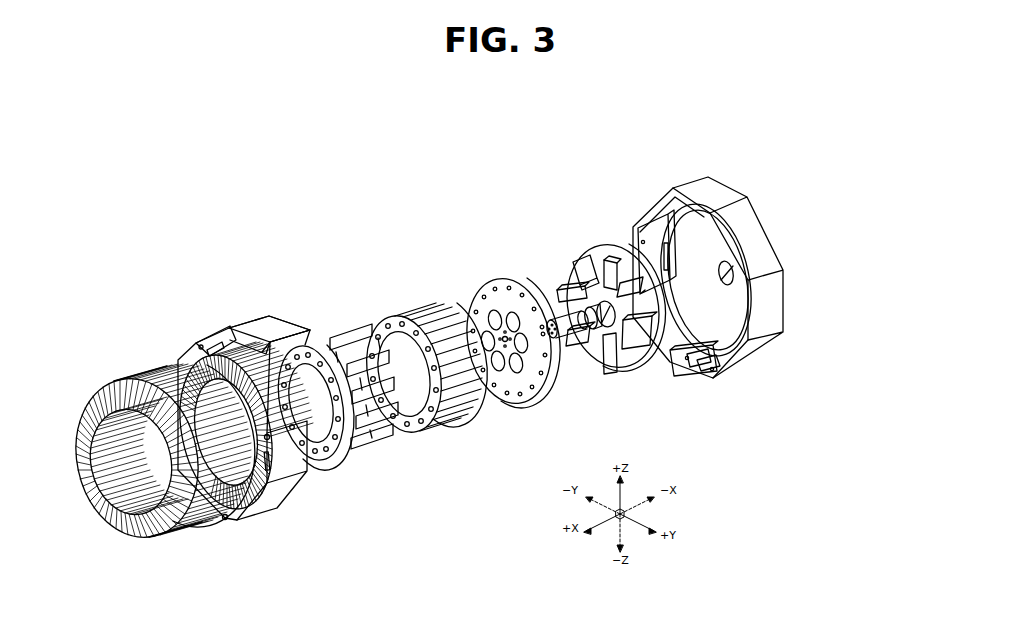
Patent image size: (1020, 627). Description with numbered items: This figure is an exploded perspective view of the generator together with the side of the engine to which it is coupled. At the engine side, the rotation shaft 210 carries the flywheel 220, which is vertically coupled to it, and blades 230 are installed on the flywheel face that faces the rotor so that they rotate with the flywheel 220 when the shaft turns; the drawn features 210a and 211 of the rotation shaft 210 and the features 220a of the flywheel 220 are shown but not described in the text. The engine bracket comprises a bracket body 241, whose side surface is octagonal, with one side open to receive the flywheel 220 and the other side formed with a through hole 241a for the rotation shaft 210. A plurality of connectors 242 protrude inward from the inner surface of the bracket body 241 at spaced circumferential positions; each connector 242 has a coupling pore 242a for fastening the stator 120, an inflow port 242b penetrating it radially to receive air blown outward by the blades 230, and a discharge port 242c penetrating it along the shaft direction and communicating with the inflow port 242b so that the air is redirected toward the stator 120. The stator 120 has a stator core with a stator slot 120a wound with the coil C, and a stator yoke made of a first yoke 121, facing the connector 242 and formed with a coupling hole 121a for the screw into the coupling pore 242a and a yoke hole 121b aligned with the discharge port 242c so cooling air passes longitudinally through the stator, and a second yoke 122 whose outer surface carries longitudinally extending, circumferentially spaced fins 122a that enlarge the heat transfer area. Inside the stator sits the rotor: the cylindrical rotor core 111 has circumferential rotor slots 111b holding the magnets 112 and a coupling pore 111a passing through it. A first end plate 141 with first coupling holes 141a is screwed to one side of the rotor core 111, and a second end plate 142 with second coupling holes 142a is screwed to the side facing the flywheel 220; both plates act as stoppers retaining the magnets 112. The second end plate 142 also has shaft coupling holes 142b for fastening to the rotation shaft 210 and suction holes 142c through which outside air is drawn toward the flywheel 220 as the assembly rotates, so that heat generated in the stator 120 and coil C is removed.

The coil C is at (147, 535).
The stator 120 is at (253, 432).
The stator slot 120a is at (237, 522).
The first yoke 121 is at (201, 347).
The coupling hole 121a is at (267, 440).
The yoke hole 121b is at (213, 366).
The second yoke 122 is at (229, 356).
The fins 122a is at (264, 341).
The first end plate 141 is at (320, 394).
The first coupling holes 141a is at (289, 345).
The rotor core 111 is at (438, 371).
The coupling pore 111a is at (440, 417).
The rotor slots 111b is at (393, 315).
The magnet 112 is at (382, 433).
The second end plate 142 is at (523, 340).
The second coupling holes 142a is at (533, 382).
The shaft coupling holes 142b is at (500, 318).
The suction holes 142c is at (502, 336).
The rotation shaft 210 is at (551, 267).
The shaft end face 210a is at (548, 324).
The shaft bearing nut 211 is at (590, 307).
The flywheel 220 is at (623, 298).
The fan blades 220a is at (605, 260).
The blade 230 is at (640, 358).
The bracket body 241 is at (739, 277).
The through hole 241a is at (728, 268).
The connector 242 is at (734, 298).
The coupling pore 242a is at (708, 372).
The inflow port 242b is at (715, 346).
The discharge port 242c is at (717, 371).